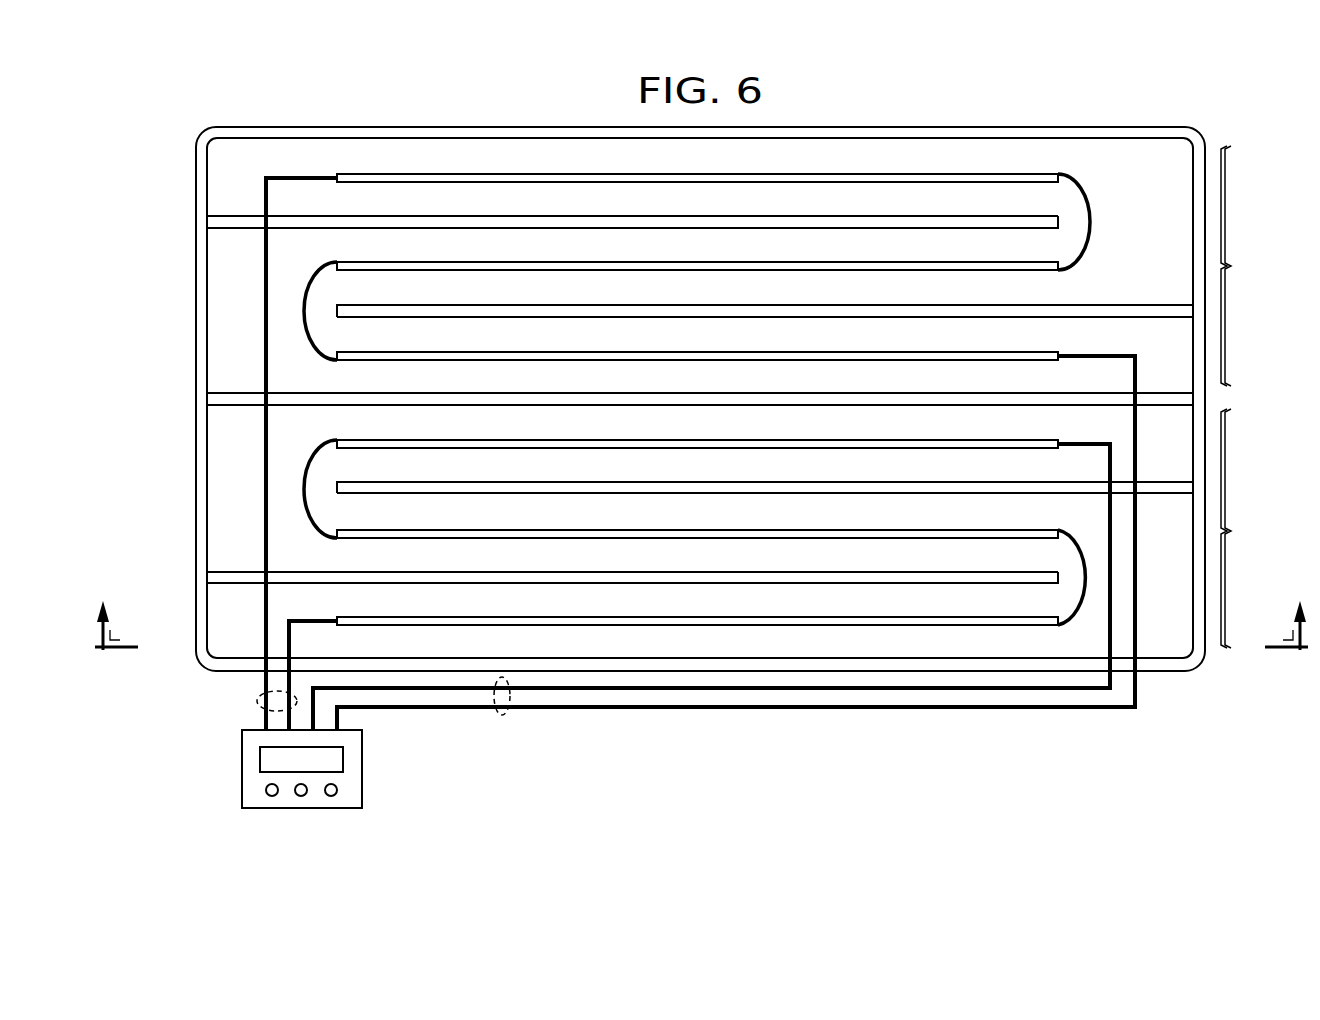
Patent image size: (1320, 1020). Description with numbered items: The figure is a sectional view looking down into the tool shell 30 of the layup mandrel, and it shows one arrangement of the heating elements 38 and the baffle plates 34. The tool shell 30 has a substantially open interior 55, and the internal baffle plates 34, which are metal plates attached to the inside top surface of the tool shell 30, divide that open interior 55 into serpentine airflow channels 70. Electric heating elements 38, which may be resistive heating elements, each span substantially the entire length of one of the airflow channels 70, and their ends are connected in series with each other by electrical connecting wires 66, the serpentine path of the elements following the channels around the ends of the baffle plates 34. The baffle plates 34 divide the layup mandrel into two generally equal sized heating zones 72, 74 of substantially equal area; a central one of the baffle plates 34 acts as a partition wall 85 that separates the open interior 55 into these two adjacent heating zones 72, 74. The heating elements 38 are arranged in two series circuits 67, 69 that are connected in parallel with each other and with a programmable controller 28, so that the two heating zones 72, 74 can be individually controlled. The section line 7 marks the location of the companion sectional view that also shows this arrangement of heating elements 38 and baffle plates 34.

The section line 7- 7 is at (702, 609).
The controller 28 is at (243, 770).
The tool shell 30 is at (821, 118).
The baffle plates 34 is at (203, 222).
The electric heating elements 38 is at (1027, 173).
The open interior 55 is at (527, 155).
The electrical connecting wires 66 is at (1090, 220).
The first series circuit 67 is at (257, 701).
The second series circuit 69 is at (503, 717).
The serpentine airflow channels 70 is at (252, 194).
The first heating zone 72 is at (1246, 266).
The second heating zone 74 is at (1246, 528).
The partition wall 85 is at (245, 232).